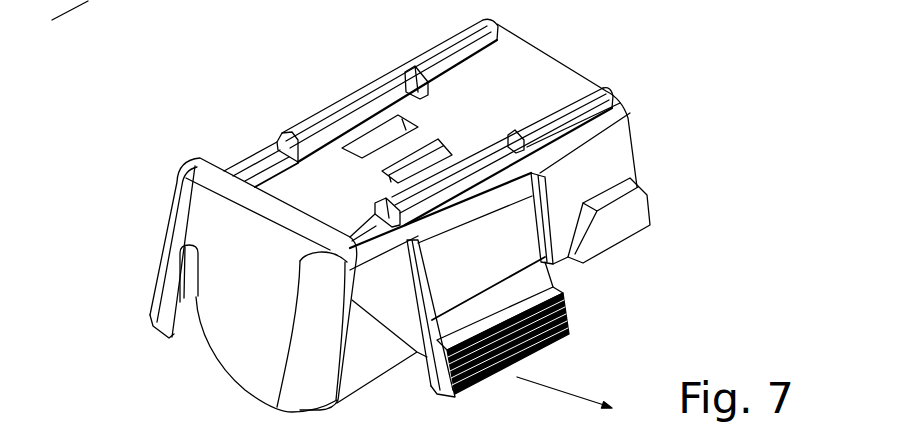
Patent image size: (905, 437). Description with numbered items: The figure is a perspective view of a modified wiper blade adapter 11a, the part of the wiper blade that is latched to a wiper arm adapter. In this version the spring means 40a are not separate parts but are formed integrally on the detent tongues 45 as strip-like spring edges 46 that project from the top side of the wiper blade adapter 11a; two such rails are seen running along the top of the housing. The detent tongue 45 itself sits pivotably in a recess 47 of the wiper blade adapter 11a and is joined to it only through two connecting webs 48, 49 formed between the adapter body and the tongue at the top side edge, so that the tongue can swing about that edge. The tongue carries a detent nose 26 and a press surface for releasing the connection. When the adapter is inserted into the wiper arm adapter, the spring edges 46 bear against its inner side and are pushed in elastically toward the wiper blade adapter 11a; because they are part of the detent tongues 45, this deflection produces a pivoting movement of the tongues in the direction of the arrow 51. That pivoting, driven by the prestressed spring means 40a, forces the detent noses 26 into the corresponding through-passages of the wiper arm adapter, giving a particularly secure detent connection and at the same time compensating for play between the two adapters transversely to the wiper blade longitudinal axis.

The modified wiper blade adapter 11a is at (650, 158).
The spring means 40a is at (322, 116).
The spring edges 46 is at (481, 148).
The connecting web 48 is at (384, 246).
The detent nose 26 is at (520, 257).
The connecting web 49 is at (543, 197).
The recess 47 is at (550, 150).
The detent tongue 45 is at (567, 310).
The arrow 51 is at (548, 378).